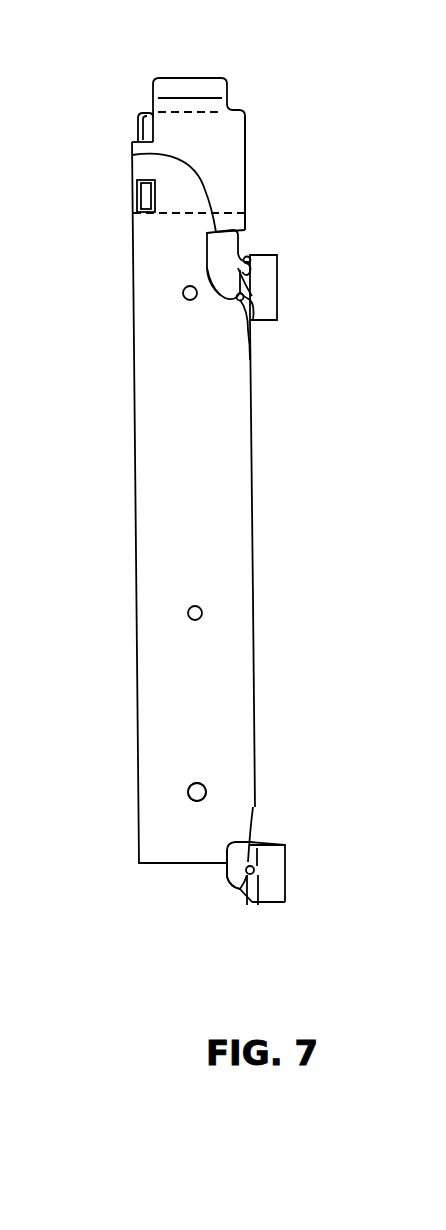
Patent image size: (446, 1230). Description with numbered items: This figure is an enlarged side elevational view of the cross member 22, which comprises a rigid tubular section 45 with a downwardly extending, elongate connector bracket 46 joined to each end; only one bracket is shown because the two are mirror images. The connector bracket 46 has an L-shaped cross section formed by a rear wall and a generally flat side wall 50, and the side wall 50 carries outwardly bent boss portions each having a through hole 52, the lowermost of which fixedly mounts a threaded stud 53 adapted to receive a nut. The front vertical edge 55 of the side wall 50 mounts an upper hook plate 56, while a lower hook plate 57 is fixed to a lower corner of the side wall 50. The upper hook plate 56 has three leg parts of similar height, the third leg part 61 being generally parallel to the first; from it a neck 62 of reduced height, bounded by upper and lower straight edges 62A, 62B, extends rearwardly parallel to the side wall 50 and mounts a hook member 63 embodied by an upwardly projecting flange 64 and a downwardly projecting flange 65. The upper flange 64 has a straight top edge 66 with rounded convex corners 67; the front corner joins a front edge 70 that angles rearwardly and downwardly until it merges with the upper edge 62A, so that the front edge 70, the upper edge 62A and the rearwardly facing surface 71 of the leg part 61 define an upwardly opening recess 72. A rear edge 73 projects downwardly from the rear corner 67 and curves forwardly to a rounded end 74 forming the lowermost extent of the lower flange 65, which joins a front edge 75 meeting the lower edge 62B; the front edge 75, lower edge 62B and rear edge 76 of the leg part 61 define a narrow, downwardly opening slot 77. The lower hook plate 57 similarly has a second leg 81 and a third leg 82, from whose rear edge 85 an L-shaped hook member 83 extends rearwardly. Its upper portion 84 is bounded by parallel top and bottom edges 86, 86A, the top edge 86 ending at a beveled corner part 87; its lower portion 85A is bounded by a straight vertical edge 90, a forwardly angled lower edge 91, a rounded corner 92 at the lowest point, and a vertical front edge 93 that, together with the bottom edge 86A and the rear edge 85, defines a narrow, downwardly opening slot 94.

The cross member 22 is at (276, 85).
The rigid tubular section 45 is at (139, 112).
The connector bracket 46 is at (136, 505).
The side wall 50 is at (240, 482).
The through hole 52 is at (183, 293).
The threaded stud 53 is at (207, 785).
The front vertical edge 55 is at (258, 634).
The upper hook plate 56 is at (315, 191).
The lower hook plate 57 is at (290, 925).
The third leg part 61 is at (252, 302).
The neck 62 is at (248, 272).
The upper straight edge 62A is at (257, 253).
The lower straight edge 62B is at (246, 285).
The hook member 63 is at (192, 243).
The upper flange 64 is at (226, 221).
The lower flange 65 is at (208, 302).
The top edge 66 is at (132, 156).
The rounded corner 67 is at (207, 235).
The front edge 70 is at (249, 250).
The rearwardly facing surface 71 is at (260, 272).
The recess 72 is at (257, 241).
The rear edge 73 is at (206, 255).
The rounded end 74 is at (235, 302).
The front edge 75 is at (237, 330).
The rear edge 76 is at (250, 315).
The slot 77 is at (238, 325).
The second leg 81 is at (285, 865).
The third leg 82 is at (277, 883).
The hook member 83 is at (227, 843).
The upper portion 84 is at (257, 848).
The rear edge 85 is at (285, 900).
The lower portion 85A is at (170, 863).
The top edge 86 is at (250, 845).
The bottom edge 86A is at (258, 852).
The beveled corner part 87 is at (214, 843).
The straight vertical edge 90 is at (227, 856).
The lower edge 91 is at (228, 880).
The rounded corner 92 is at (245, 880).
The front edge 93 is at (246, 912).
The slot 94 is at (247, 906).